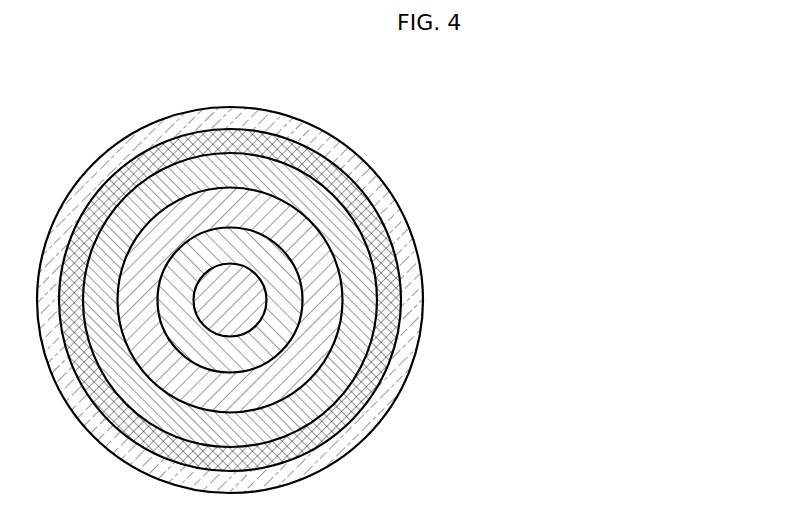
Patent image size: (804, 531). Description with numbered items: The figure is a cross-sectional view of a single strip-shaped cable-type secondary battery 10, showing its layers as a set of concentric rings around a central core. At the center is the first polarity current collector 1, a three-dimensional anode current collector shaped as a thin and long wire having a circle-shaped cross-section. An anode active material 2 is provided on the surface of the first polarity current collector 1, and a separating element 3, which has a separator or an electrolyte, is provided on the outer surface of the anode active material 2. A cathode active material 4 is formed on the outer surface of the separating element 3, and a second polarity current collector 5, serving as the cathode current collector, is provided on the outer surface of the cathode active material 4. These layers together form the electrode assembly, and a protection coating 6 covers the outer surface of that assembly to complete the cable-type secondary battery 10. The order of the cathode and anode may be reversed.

The cable-type secondary battery 10 is at (58, 155).
The first polarity current collector 1 is at (267, 297).
The anode active material 2 is at (270, 257).
The separating element 3 is at (293, 215).
The cathode active material 4 is at (305, 184).
The second polarity current collector 5 is at (304, 153).
The protection coating 6 is at (297, 128).